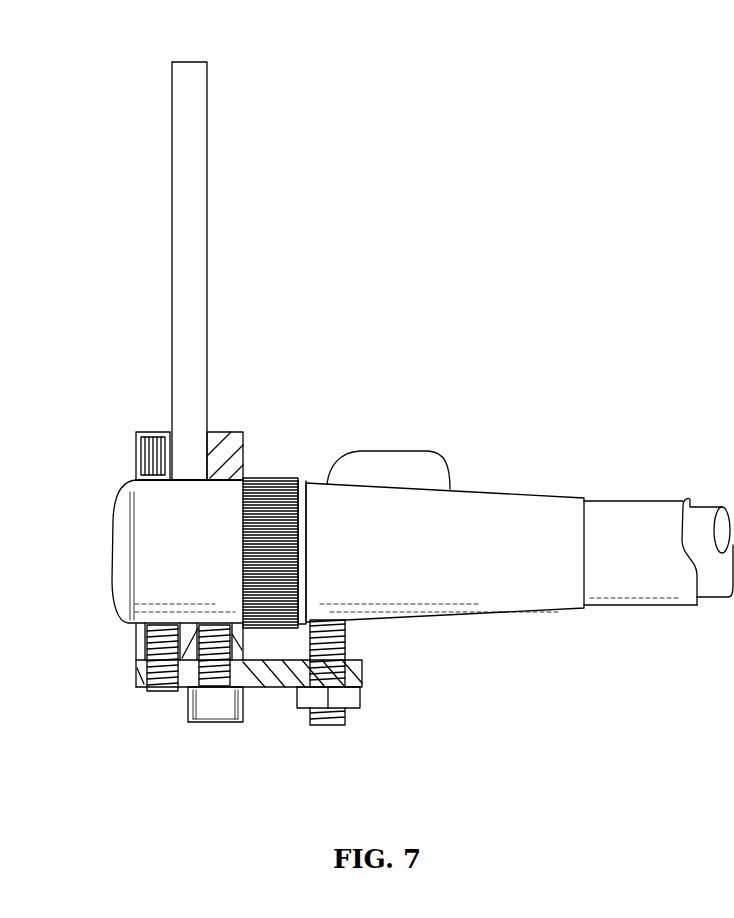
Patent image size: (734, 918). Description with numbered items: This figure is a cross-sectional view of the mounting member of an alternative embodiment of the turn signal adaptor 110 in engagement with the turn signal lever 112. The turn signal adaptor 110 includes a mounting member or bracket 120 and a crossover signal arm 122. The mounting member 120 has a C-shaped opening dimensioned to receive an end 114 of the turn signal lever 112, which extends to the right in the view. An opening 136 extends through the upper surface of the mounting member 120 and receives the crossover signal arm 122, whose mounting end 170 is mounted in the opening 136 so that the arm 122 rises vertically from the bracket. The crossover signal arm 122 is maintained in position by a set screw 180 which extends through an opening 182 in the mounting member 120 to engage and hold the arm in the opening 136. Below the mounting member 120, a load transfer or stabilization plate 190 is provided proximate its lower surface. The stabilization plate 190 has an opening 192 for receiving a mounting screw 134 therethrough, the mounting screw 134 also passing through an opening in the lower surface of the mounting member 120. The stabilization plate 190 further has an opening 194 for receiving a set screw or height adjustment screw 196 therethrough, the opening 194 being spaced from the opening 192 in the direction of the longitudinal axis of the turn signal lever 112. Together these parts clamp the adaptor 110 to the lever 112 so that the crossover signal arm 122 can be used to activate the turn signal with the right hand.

The turn signal adaptor 110 is at (262, 272).
The turn signal lever 112 is at (526, 475).
The end of the turn signal lever 114 is at (148, 568).
The mounting member 120 is at (252, 456).
The crossover signal arm 122 is at (207, 193).
The mounting screw 134 is at (171, 692).
The opening for receiving the crossover signal arm 136 is at (208, 450).
The mounting end 170 is at (188, 463).
The set screw 180 is at (157, 440).
The opening in mounting member 182 is at (138, 457).
The stabilization plate 190 is at (263, 688).
The opening for receiving the mounting screw 192 is at (160, 692).
The opening for receiving the height adjustment screw 194 is at (348, 650).
The height adjustment screw 196 is at (348, 720).